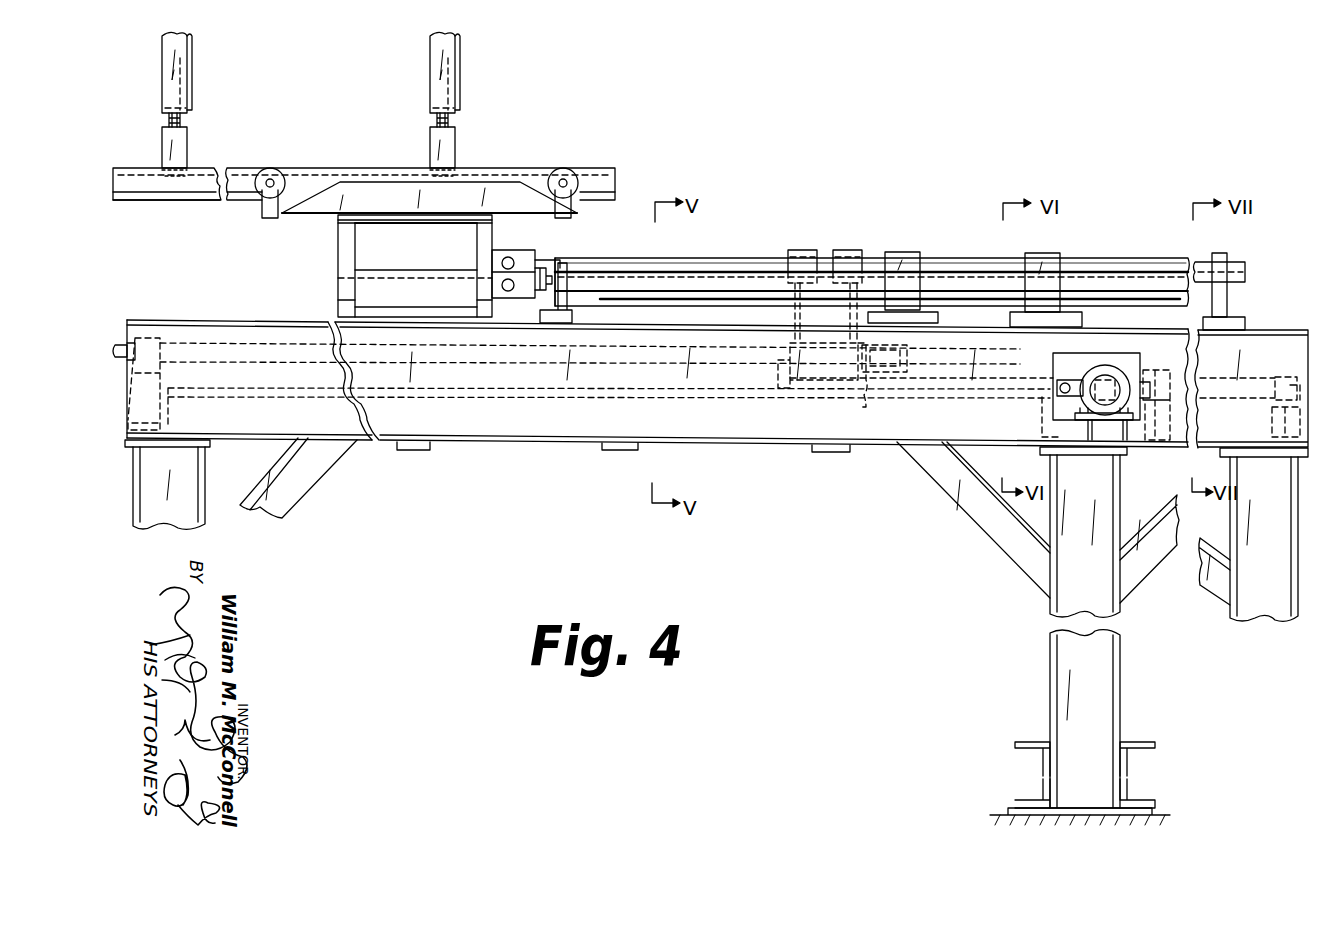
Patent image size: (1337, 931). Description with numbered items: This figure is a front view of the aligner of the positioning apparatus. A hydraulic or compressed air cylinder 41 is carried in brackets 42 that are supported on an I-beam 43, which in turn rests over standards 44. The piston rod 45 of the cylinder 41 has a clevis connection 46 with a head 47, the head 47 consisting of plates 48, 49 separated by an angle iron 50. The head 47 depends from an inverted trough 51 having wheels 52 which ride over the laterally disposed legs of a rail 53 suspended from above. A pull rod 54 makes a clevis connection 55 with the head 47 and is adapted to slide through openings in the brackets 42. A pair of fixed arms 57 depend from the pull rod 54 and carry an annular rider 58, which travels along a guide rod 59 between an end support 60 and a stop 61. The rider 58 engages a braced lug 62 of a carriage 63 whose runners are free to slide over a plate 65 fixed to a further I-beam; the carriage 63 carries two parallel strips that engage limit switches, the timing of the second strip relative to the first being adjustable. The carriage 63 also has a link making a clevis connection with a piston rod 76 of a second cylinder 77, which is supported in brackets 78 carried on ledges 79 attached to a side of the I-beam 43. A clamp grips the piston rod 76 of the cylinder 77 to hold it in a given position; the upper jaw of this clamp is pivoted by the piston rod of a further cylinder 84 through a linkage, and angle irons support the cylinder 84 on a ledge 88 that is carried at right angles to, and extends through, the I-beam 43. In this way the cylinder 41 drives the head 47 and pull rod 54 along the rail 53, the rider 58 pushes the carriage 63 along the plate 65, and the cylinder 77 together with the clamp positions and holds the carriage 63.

The cylinder 41 is at (737, 287).
The brackets 42 is at (566, 262).
The I-beam 43 is at (505, 438).
The standards 44 is at (193, 482).
The piston rod 45 is at (541, 266).
The clevis connection 46 is at (512, 292).
The head 47 is at (408, 222).
The plate 48 is at (341, 250).
The plate 49 is at (478, 288).
The angle iron 50 is at (460, 272).
The inverted trough 51 is at (480, 185).
The wheels 52 is at (268, 170).
The rail 53 is at (140, 174).
The pull rod 54 is at (613, 266).
The clevis connection 55 is at (511, 257).
The fixed arms 57 is at (865, 315).
The annular rider 58 is at (862, 396).
The guide rod 59 is at (408, 362).
The end support 60 is at (145, 337).
The stop 61 is at (900, 355).
The braced lug 62 is at (783, 370).
The carriage 63 is at (937, 380).
The plate 65 is at (262, 396).
The piston rod 76 is at (1132, 380).
The cylinder 77 is at (1231, 375).
The brackets 78 is at (1281, 377).
The ledges 79 is at (1272, 422).
The cylinder 84 is at (1080, 376).
The ledge 88 is at (1075, 415).